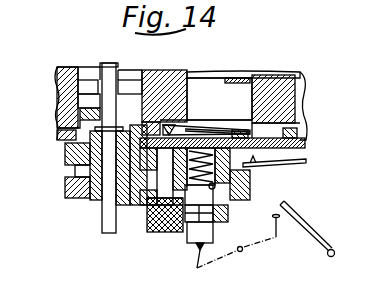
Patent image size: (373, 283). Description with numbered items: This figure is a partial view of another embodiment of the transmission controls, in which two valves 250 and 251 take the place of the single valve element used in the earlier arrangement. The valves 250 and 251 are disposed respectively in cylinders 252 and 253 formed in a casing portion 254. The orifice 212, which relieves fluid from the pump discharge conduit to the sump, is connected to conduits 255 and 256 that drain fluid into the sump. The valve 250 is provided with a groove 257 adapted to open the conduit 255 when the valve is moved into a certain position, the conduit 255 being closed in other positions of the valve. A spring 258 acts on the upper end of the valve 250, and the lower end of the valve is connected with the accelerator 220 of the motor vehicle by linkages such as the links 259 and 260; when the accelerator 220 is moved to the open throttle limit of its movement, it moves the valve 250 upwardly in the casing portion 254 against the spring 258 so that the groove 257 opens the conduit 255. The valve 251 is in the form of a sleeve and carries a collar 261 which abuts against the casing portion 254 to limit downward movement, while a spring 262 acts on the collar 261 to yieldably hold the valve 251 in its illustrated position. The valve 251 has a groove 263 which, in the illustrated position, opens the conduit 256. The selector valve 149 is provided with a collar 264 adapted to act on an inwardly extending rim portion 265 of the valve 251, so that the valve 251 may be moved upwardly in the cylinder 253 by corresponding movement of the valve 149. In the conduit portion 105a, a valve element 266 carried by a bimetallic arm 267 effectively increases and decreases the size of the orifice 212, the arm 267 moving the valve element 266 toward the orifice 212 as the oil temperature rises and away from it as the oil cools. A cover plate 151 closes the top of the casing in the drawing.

The selector valve 149 is at (95, 56).
The cover plate 151 is at (236, 66).
The conduit portion 105a is at (270, 128).
The collar 264 is at (103, 126).
The rim portion 265 is at (123, 127).
The valve element 266 is at (191, 126).
The bimetallic arm 267 is at (206, 121).
The spring 262 is at (82, 128).
The collar 261 is at (66, 152).
The conduit 256 is at (73, 170).
The groove 263 is at (66, 190).
The valve 251 is at (92, 196).
The orifice 212 is at (176, 156).
The spring 258 is at (215, 178).
The cylinder 252 is at (216, 188).
The groove 257 is at (228, 212).
The cylinder 253 is at (150, 200).
The casing portion 254 is at (150, 212).
The conduit 255 is at (152, 231).
The valve 250 is at (186, 250).
The link 260 is at (196, 264).
The link 259 is at (262, 246).
The accelerator 220 is at (306, 222).